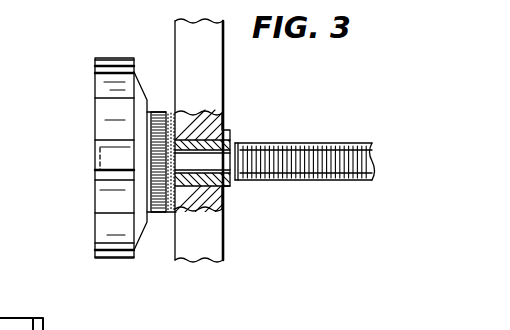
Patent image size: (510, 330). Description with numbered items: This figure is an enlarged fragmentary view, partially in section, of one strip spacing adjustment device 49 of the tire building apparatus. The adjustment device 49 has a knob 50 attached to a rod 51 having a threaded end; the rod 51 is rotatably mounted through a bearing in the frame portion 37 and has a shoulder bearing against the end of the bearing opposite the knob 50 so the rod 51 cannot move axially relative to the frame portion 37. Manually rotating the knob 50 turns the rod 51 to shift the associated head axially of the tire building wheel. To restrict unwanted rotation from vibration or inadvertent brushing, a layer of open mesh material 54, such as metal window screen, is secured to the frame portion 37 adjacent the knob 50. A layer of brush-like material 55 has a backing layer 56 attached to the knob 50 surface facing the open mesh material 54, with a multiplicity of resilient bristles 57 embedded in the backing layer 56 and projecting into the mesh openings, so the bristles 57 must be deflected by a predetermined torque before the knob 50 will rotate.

The adjustment device 49 is at (102, 41).
The knob 50 is at (95, 110).
The rod 51 is at (327, 179).
The open mesh material 54 is at (160, 214).
The brush-like material 55 is at (157, 217).
The backing layer 56 is at (152, 183).
The resilient bristles 57 is at (160, 112).
The frame portion 37 is at (218, 85).